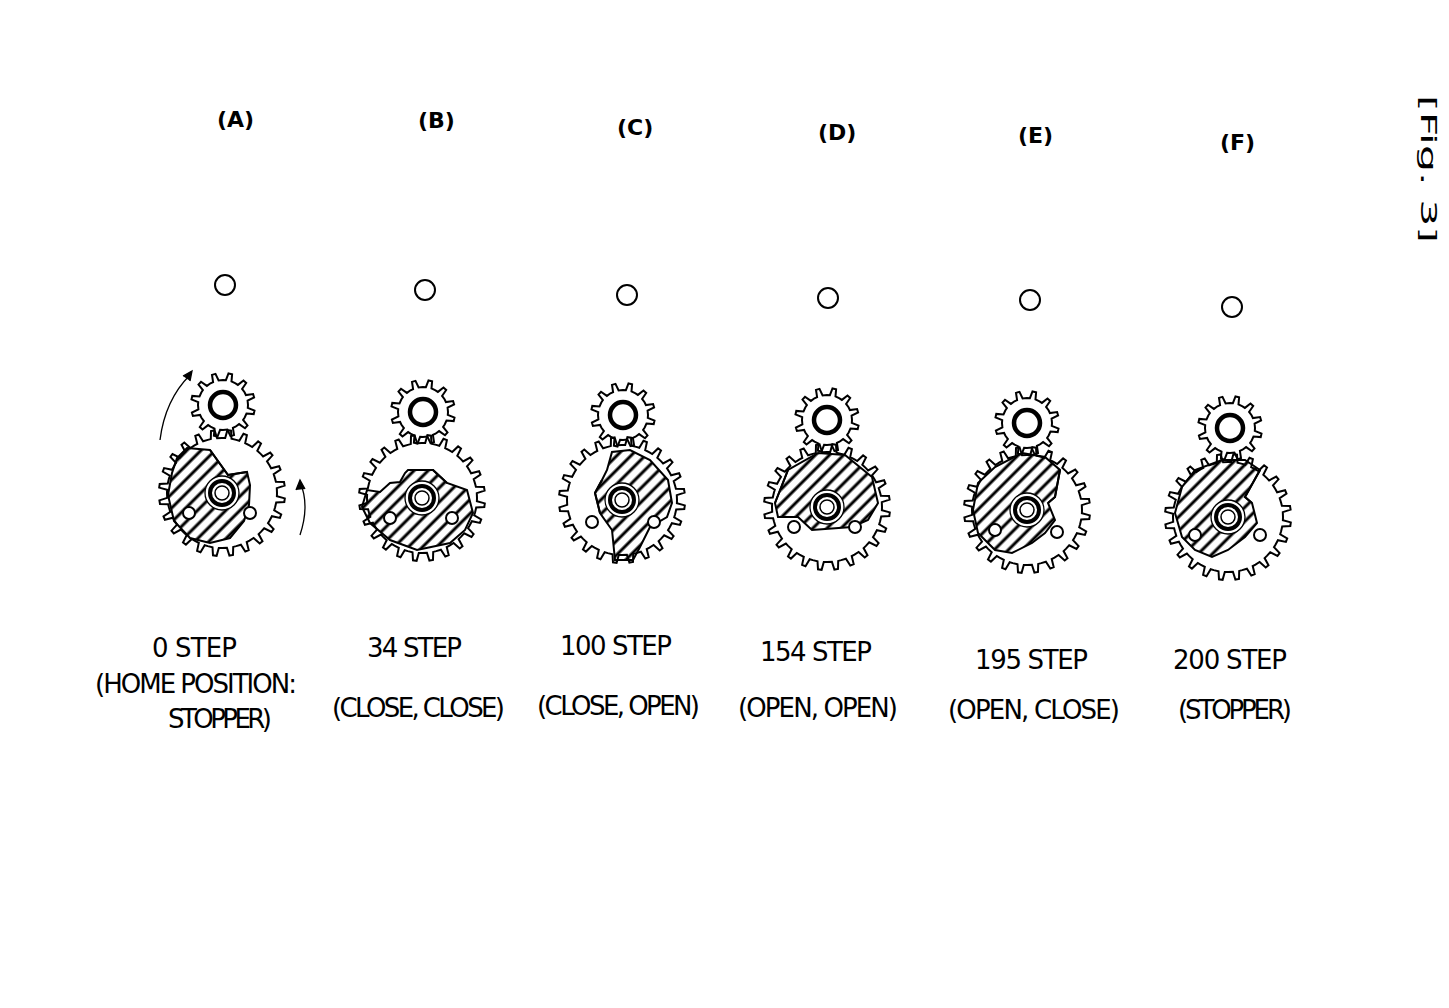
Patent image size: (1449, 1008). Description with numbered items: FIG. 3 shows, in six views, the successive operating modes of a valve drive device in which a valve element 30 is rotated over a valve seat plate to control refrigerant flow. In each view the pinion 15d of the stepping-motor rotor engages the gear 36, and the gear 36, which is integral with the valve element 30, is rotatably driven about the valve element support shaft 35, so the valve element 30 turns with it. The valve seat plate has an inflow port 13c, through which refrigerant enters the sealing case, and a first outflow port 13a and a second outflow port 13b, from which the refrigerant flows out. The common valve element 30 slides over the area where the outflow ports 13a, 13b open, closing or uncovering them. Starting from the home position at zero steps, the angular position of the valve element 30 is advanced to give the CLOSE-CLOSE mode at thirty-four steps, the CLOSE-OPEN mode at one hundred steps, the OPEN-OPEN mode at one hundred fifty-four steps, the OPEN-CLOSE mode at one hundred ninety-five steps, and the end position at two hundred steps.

The first outflow port 13a is at (255, 515).
The second outflow port 13b is at (184, 514).
The inflow port 13c is at (232, 292).
The pinion 15d is at (242, 398).
The valve element 30 is at (170, 472).
The valve element support shaft 35 is at (250, 490).
The gear 36 is at (272, 457).